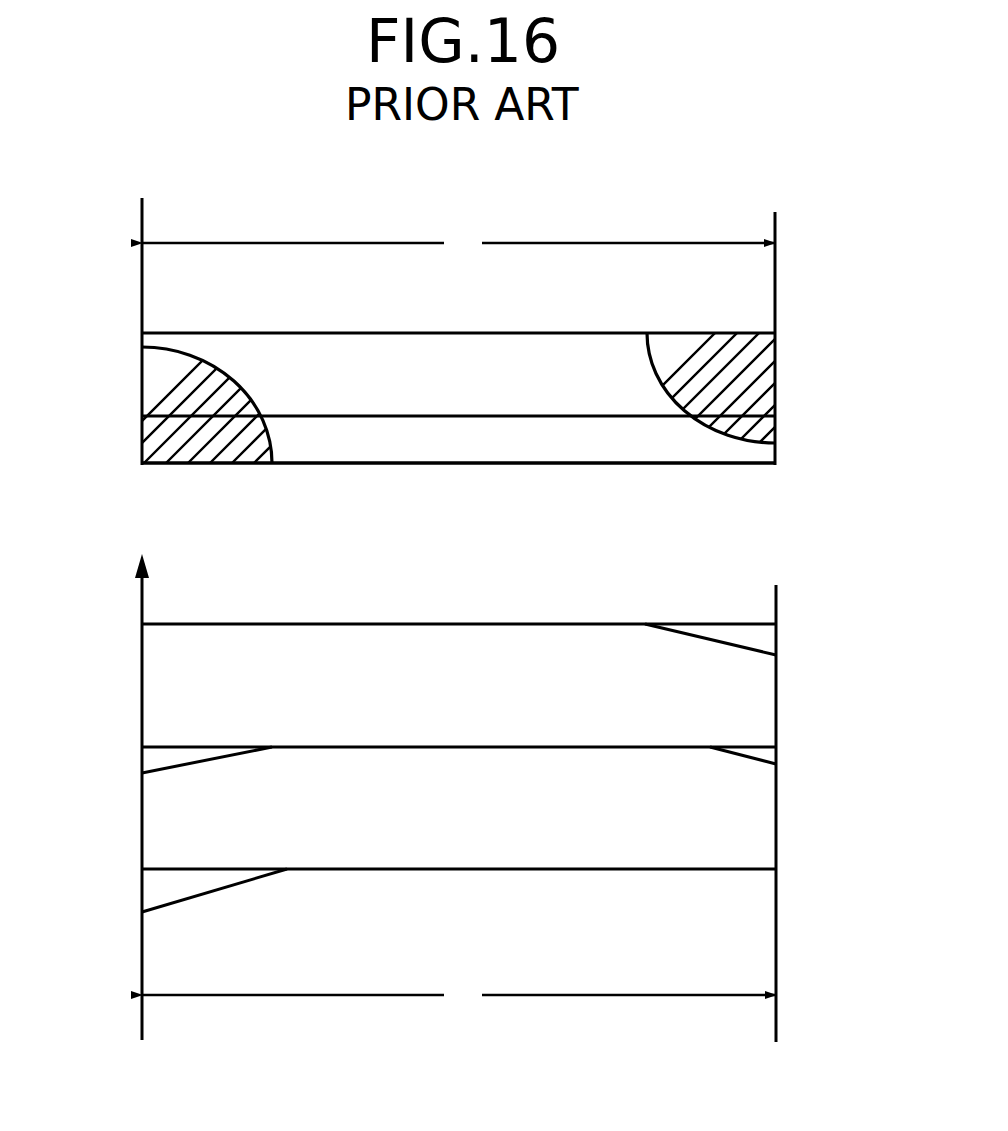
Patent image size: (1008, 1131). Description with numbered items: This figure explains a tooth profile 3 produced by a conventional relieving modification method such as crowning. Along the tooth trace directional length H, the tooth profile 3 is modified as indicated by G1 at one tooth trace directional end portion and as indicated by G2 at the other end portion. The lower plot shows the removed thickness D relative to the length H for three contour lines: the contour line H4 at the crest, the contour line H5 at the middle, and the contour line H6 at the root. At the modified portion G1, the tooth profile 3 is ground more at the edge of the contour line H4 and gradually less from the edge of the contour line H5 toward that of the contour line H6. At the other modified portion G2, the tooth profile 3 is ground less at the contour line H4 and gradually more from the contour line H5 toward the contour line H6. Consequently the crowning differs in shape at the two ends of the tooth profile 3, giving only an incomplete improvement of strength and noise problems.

The tooth trace directional length H is at (459, 621).
The contour line (root) H6 is at (776, 333).
The contour line (middle) H5 is at (775, 416).
The contour line (crest) H4 is at (775, 463).
The modified portion G1 is at (185, 440).
The modified portion G2 is at (740, 366).
The tooth profile 3 is at (492, 440).
The thickness D is at (122, 797).